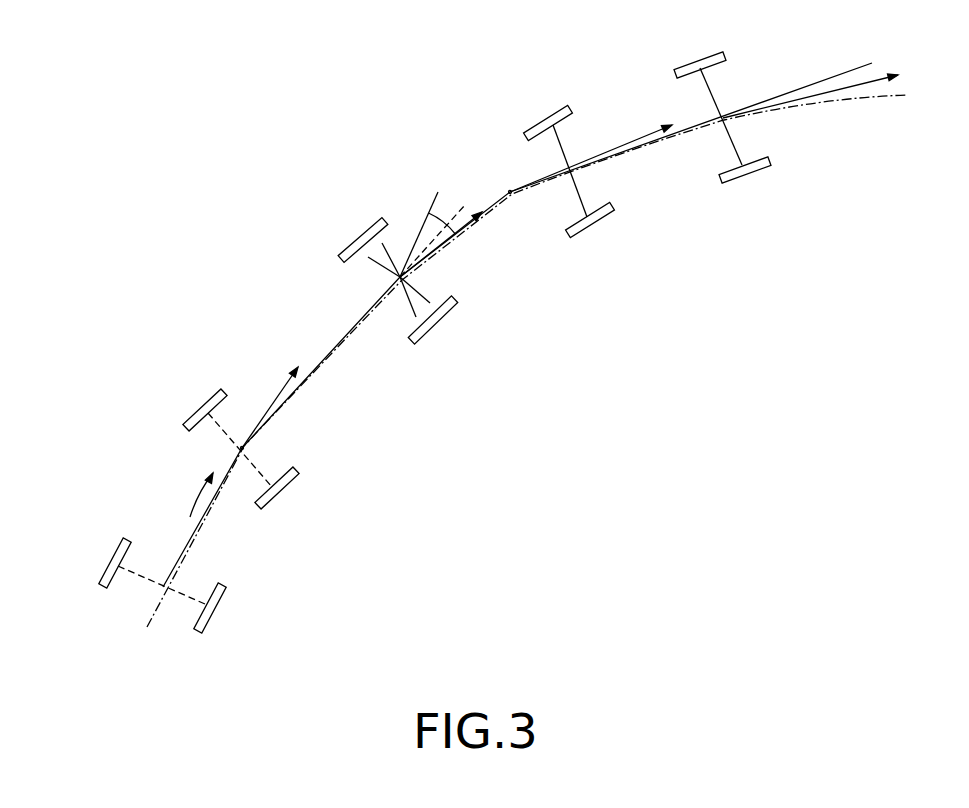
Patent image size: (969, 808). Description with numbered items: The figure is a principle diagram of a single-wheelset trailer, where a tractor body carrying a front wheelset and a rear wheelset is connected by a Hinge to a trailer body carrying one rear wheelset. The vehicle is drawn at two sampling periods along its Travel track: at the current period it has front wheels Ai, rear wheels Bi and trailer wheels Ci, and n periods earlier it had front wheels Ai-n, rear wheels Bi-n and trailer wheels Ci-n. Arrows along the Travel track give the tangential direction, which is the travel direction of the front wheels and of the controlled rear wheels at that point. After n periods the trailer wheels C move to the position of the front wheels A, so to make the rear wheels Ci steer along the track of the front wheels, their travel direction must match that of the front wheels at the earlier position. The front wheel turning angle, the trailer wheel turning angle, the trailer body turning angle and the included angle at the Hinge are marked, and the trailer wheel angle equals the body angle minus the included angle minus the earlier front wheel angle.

The front wheelset of the tractor body at sampling period i Ai is at (685, 63).
The rear wheelset of the tractor body at sampling period i Bi is at (543, 115).
The rear wheelset of the trailer body at sampling period i Ci is at (380, 217).
The front wheelset of the tractor body at sampling period i-n Ai-n is at (340, 258).
The rear wheelset of the tractor body at sampling period i-n Bi-n is at (200, 405).
The rear wheelset of the trailer body at sampling period i-n Ci-n is at (113, 558).
The hinge structure Hinge is at (369, 324).
The travel track of the vehicle Travel track is at (527, 361).